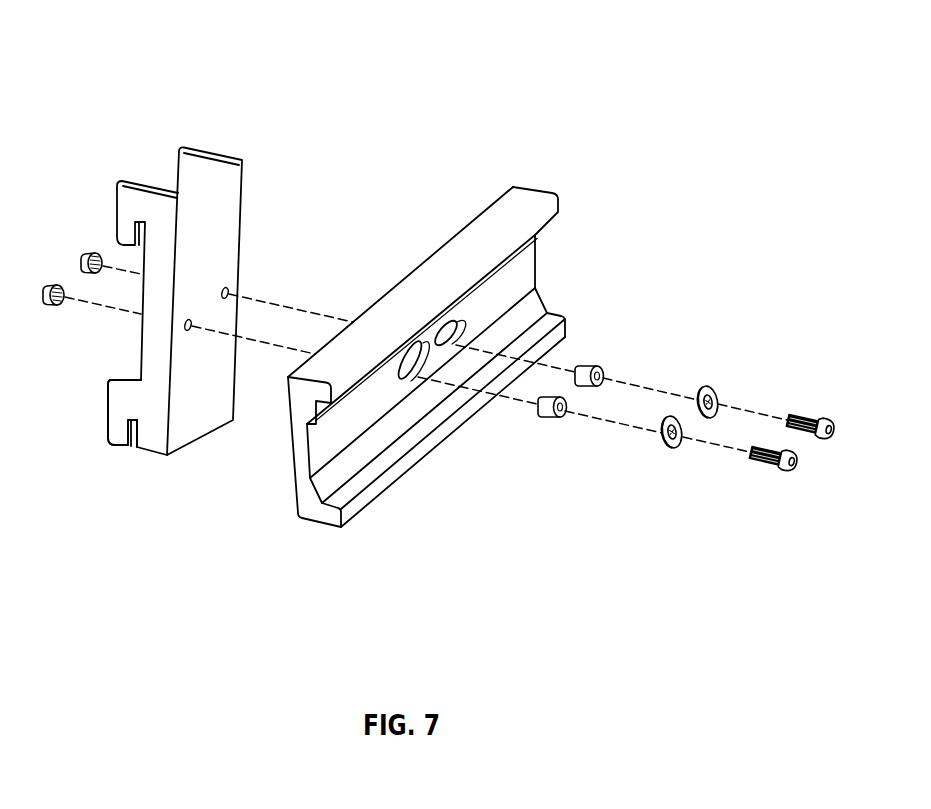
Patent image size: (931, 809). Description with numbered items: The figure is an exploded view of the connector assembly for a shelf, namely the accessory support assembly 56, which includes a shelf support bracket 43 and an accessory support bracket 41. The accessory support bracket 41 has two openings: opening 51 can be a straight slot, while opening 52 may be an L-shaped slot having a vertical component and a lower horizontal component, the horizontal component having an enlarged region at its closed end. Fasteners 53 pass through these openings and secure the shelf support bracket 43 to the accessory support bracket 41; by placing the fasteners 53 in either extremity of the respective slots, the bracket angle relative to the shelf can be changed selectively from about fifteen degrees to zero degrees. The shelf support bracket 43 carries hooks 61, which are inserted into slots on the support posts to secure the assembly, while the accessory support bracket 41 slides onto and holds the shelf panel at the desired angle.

The accessory support assembly 56 is at (318, 78).
The shelf support bracket 43 is at (227, 247).
The hook 61 is at (118, 432).
The accessory support bracket 41 is at (426, 366).
The opening 51 is at (449, 327).
The opening 52 is at (404, 378).
The fastener 53 is at (823, 419).